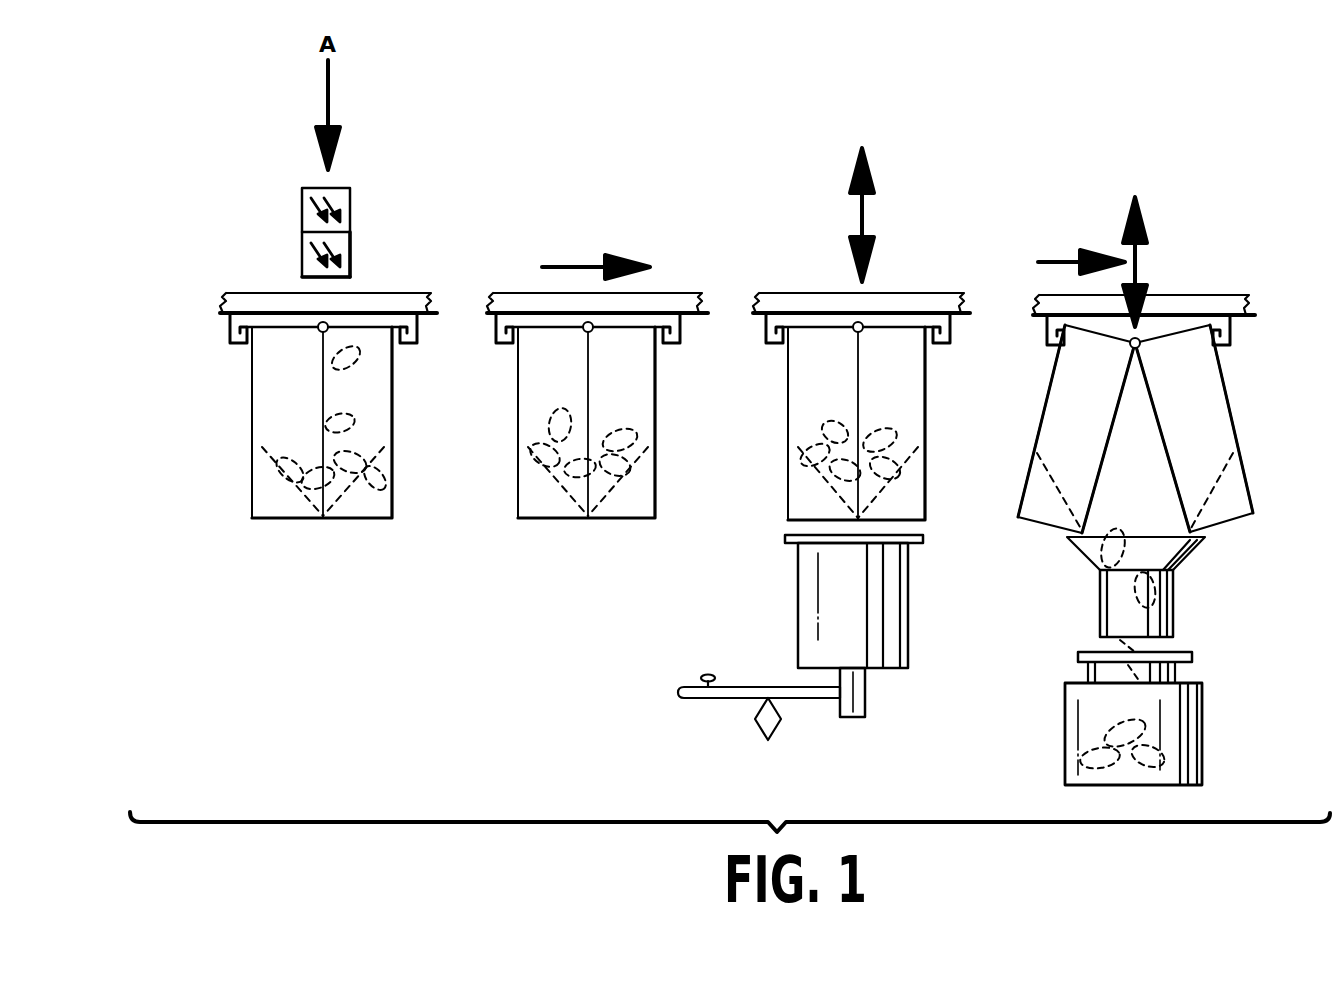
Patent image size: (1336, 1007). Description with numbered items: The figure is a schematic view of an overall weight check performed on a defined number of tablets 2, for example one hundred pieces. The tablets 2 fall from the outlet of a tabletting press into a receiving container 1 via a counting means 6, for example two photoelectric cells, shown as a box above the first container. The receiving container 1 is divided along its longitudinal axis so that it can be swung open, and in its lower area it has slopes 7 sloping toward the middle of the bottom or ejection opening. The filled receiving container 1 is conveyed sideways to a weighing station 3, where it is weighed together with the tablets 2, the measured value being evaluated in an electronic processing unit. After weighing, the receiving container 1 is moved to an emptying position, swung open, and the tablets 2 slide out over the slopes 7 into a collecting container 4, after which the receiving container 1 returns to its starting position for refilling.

The receiving container 1 is at (277, 388).
The tablets 2 is at (265, 446).
The weighing station 3 is at (775, 687).
The collecting container 4 is at (1205, 712).
The counting means 6 is at (350, 245).
The slopes 7 is at (385, 500).